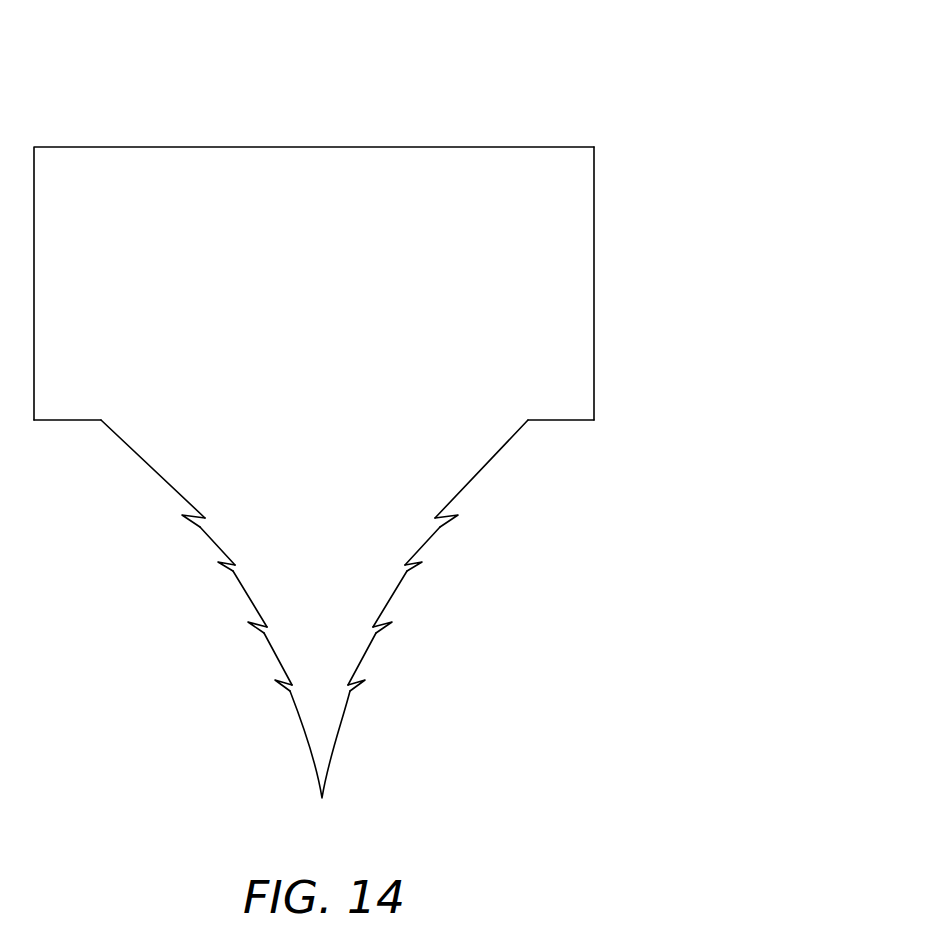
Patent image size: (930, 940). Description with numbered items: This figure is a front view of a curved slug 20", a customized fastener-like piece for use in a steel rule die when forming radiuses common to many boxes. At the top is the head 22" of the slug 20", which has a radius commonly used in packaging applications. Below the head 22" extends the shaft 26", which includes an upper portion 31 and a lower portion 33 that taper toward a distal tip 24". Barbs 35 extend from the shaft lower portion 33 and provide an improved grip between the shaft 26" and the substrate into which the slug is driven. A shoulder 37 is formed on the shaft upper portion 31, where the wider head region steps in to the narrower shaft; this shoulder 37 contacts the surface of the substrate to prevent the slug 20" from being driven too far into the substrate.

The curved slug 20 is at (497, 64).
The head 22 is at (217, 147).
The distal tip 24 is at (322, 798).
The shaft 26 is at (190, 586).
The upper portion 31 is at (595, 275).
The lower portion 33 is at (475, 472).
The barbs 35 is at (393, 622).
The shoulder 37 is at (60, 422).